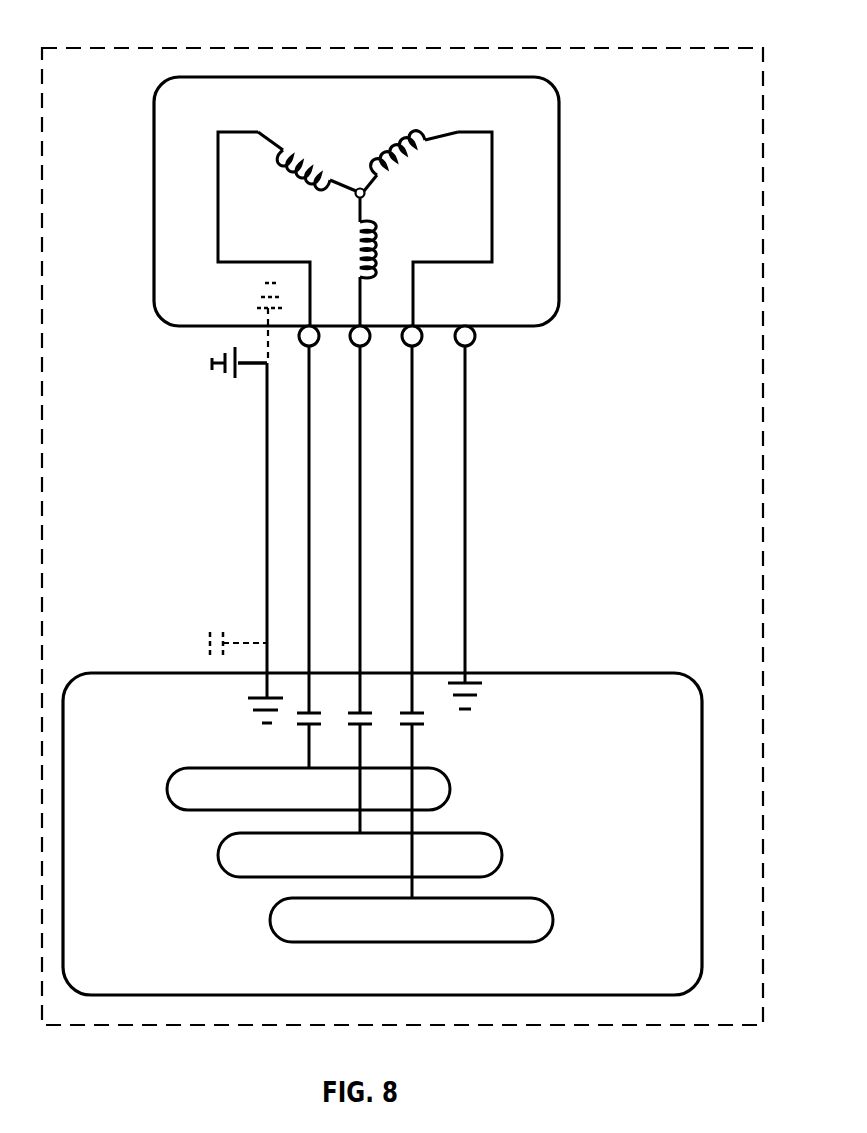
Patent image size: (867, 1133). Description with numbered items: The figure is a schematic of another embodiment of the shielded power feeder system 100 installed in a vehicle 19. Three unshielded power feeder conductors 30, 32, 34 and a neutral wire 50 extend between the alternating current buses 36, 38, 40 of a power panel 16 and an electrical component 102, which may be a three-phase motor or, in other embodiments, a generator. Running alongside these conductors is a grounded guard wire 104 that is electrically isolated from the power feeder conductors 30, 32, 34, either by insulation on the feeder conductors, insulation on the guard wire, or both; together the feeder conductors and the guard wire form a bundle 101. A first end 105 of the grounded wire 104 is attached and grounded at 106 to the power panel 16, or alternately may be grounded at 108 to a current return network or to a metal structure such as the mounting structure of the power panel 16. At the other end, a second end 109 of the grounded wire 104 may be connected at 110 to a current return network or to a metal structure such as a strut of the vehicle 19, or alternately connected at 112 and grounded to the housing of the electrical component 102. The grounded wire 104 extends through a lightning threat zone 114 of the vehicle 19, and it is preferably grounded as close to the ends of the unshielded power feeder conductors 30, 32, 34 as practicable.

The vehicle 19 is at (710, 47).
The electrical component 102 is at (559, 135).
The connection to housing of electrical component 112 is at (258, 308).
The connection to current return network 110 is at (210, 367).
The second end of grounded wire 109 is at (263, 366).
The lightning threat zone 114 is at (194, 444).
The grounded guard wire 104 is at (266, 506).
The unshielded power feeder conductor 30 is at (308, 568).
The unshielded power feeder conductor 32 is at (361, 433).
The unshielded power feeder conductor 34 is at (414, 447).
The neutral wire 50 is at (467, 460).
The shielded power feeder system 100 is at (498, 502).
The bundle 101 is at (472, 567).
The ground connection to current return network or metal structure 108 is at (237, 632).
The first end of grounded wire 105 is at (266, 668).
The power panel 16 is at (663, 672).
The ground connection to power panel 106 is at (262, 715).
The alternating current bus 36 is at (428, 768).
The alternating current bus 38 is at (480, 833).
The alternating current bus 40 is at (532, 898).